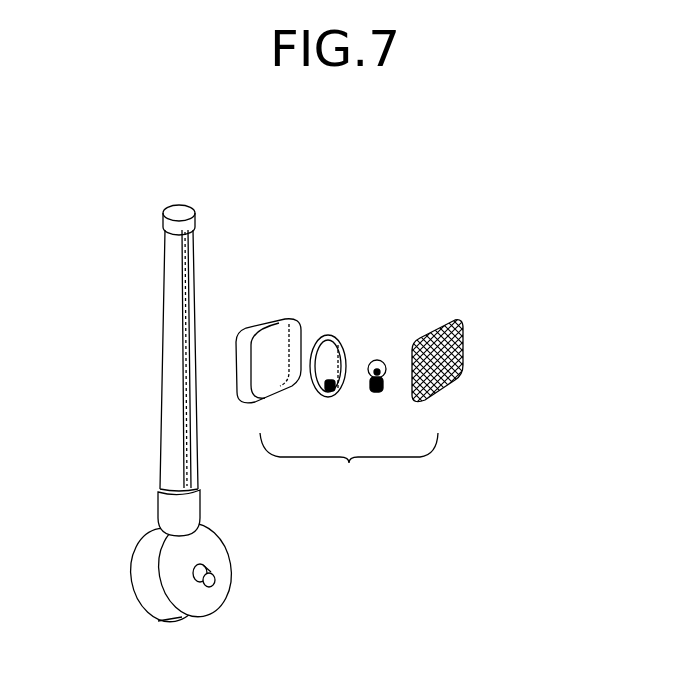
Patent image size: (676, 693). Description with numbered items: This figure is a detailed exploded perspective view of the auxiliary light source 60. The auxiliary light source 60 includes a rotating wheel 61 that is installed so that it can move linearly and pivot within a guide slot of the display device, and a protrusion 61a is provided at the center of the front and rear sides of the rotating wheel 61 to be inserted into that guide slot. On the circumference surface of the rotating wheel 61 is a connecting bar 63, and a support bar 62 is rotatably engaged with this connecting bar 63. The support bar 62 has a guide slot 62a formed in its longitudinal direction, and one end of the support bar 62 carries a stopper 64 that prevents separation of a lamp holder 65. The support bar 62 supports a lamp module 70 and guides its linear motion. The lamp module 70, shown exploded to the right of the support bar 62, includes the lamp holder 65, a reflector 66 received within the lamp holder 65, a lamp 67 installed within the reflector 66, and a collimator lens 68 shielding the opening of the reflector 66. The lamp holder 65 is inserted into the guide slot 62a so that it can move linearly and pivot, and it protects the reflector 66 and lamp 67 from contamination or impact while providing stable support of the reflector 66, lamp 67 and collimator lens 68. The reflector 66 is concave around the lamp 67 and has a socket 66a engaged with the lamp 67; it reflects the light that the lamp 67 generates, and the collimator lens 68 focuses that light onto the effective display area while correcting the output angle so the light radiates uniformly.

The auxiliary light source 60 is at (365, 198).
The rotating wheel 61 is at (230, 548).
The protrusion 61a is at (214, 585).
The support bar 62 is at (163, 385).
The guide slot 62a is at (183, 316).
The connecting bar 63 is at (164, 514).
The stopper 64 is at (184, 209).
The lamp holder 65 is at (280, 319).
The reflector 66 is at (328, 336).
The socket 66a is at (330, 392).
The lamp 67 is at (378, 360).
The collimator lens 68 is at (450, 320).
The lamp module 70 is at (349, 464).